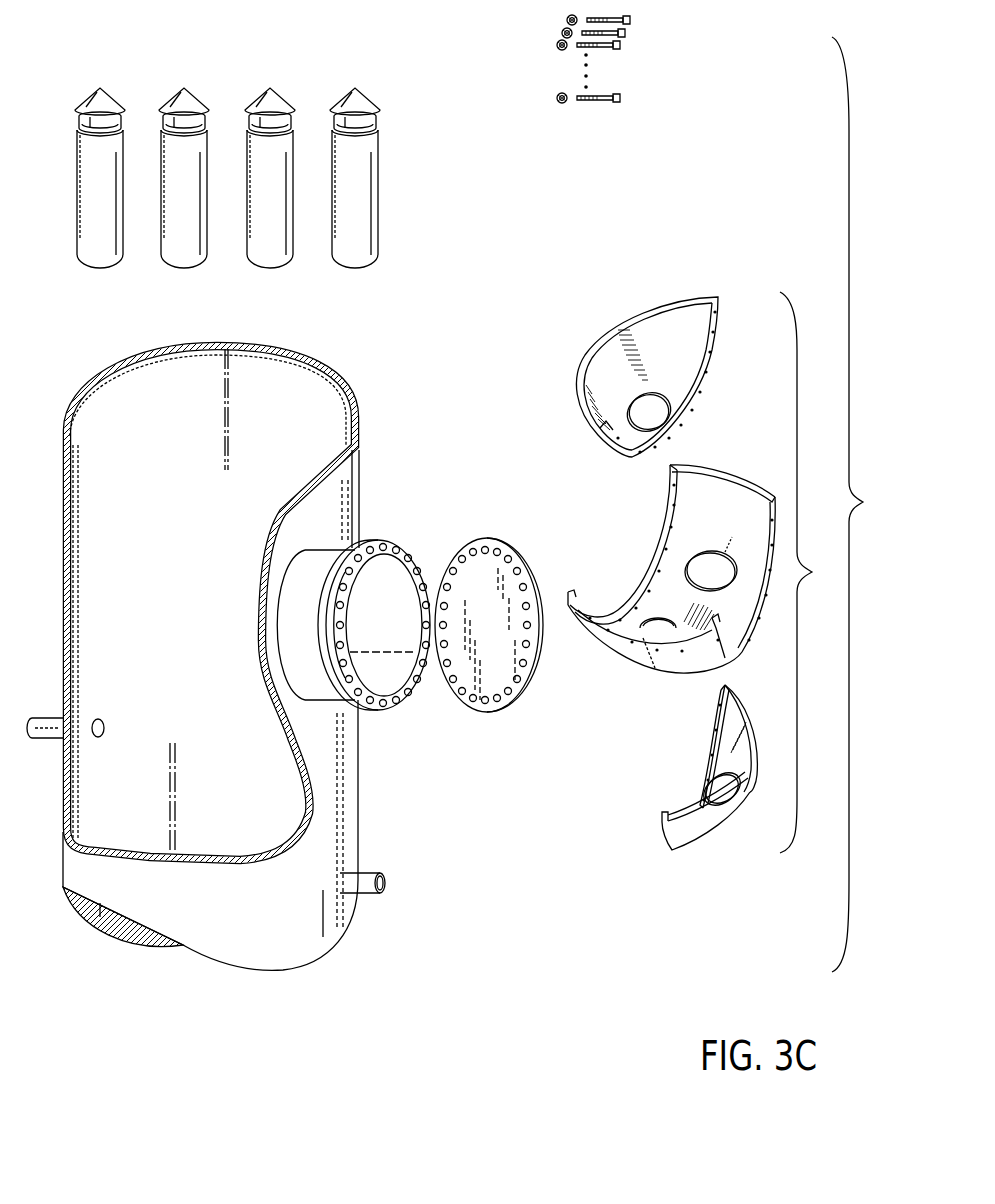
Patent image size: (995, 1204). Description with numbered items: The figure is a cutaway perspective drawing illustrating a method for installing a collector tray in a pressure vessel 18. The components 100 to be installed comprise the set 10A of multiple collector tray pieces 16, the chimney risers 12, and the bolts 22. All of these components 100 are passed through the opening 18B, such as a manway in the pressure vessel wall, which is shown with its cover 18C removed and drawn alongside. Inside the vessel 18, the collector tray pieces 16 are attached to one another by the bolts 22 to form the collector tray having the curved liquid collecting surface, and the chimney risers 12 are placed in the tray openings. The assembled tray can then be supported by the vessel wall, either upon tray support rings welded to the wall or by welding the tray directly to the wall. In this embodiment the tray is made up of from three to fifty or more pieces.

The chimney risers 12 is at (162, 40).
The bolts 22 is at (645, 78).
The pressure vessel 18 is at (372, 384).
The opening 18B is at (380, 566).
The cover 18C is at (533, 578).
The collector tray pieces 16 is at (676, 390).
The set of multiple collector tray pieces 10A is at (814, 572).
The components 100 is at (864, 504).